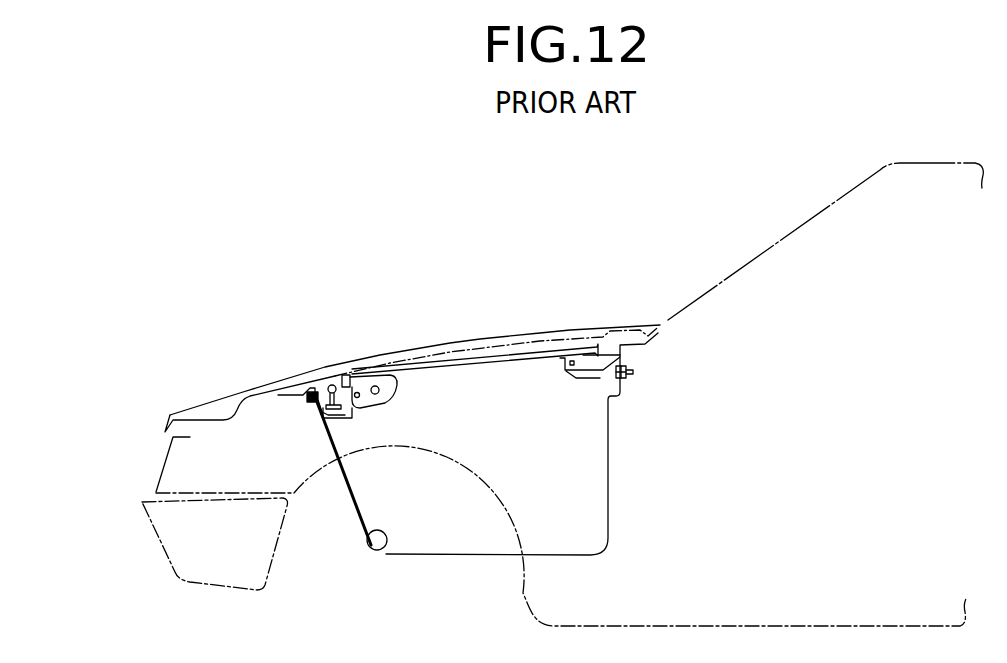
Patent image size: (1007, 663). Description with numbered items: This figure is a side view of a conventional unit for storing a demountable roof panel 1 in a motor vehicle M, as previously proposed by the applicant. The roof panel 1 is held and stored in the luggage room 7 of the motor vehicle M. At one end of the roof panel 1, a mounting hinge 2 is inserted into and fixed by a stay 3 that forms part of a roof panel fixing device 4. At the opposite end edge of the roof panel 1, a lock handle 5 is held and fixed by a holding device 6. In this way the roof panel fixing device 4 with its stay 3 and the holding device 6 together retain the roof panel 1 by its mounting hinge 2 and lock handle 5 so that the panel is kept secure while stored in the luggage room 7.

The roof panel 1 is at (480, 366).
The mounting hinge 2 is at (603, 363).
The stay 3 is at (562, 372).
The roof panel fixing device 4 is at (574, 379).
The lock handle 5 is at (381, 405).
The holding device 6 is at (318, 418).
The luggage room 7 is at (386, 553).
The motor vehicle M is at (653, 298).